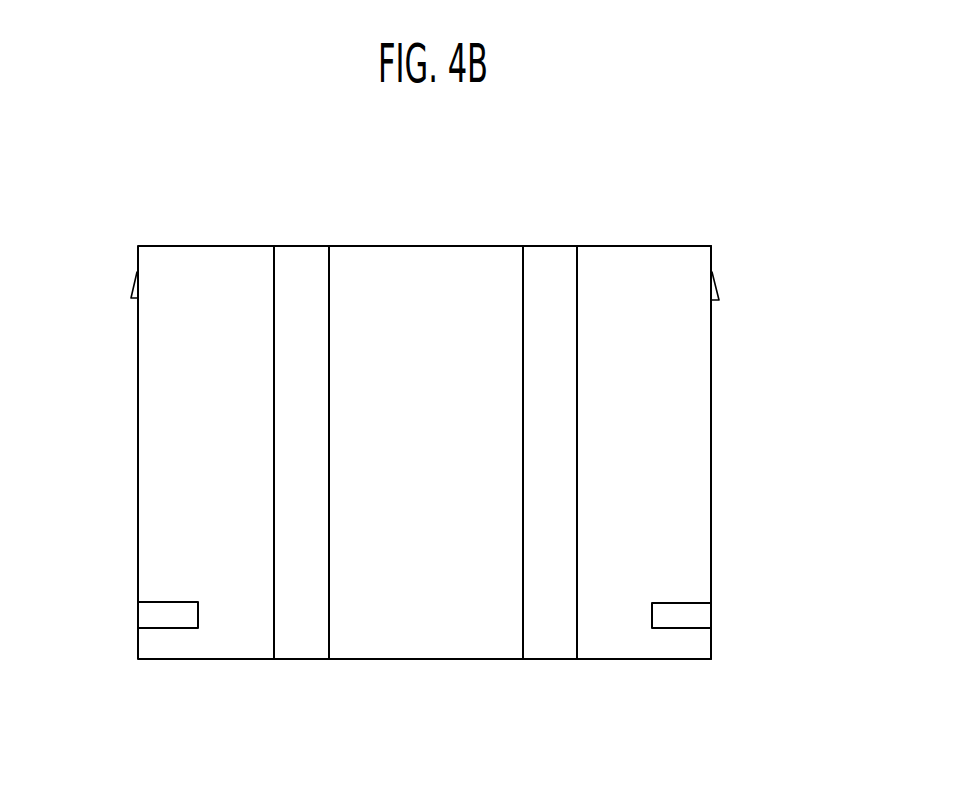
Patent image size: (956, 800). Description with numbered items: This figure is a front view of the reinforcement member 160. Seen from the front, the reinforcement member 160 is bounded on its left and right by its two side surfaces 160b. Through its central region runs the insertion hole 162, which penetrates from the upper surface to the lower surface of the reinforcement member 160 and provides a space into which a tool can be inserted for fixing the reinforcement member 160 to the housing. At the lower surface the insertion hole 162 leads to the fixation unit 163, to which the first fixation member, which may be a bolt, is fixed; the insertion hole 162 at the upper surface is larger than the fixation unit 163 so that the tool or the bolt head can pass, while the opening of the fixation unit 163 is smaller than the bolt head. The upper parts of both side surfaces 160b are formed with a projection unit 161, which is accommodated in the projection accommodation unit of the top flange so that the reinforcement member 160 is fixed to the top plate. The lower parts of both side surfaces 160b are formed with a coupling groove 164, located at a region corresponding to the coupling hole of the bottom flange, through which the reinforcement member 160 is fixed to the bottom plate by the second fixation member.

The reinforcement member 160 is at (764, 210).
The side surface 160b is at (703, 445).
The projection unit 161 is at (134, 287).
The insertion hole 162 is at (552, 275).
The fixation unit 163 is at (547, 659).
The coupling groove 164 is at (148, 614).